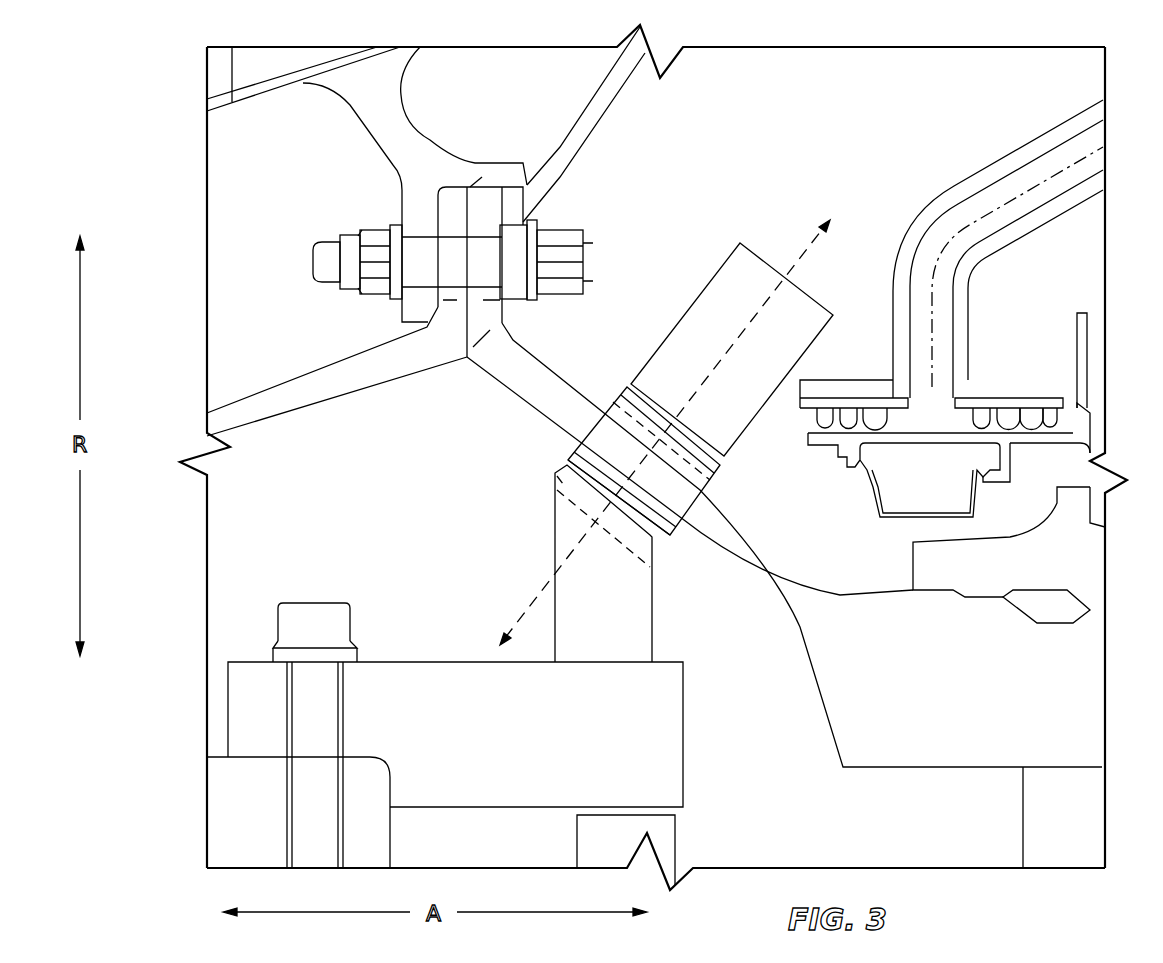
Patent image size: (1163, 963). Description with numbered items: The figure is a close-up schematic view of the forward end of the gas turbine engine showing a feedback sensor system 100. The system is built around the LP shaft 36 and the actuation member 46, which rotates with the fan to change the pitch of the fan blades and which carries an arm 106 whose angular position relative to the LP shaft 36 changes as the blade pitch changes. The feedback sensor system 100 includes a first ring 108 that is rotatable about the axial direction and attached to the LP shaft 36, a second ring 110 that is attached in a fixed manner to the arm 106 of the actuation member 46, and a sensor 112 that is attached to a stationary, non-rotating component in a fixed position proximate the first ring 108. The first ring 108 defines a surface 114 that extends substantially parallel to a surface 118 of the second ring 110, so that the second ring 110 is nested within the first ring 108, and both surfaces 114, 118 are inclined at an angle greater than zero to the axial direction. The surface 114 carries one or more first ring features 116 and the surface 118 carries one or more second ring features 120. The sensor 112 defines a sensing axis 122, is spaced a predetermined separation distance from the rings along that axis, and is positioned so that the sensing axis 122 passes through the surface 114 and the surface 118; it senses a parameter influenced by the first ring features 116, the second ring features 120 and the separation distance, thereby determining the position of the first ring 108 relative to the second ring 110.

The feedback sensor system 100 is at (746, 95).
The LP shaft 36 is at (784, 588).
The actuation member 46 is at (300, 556).
The arm 106 is at (373, 717).
The first ring 108 is at (616, 413).
The second ring 110 is at (577, 592).
The sensor 112 is at (722, 297).
The surface 114 is at (636, 376).
The first ring features 116 is at (640, 413).
The surface 118 is at (652, 515).
The second ring features 120 is at (573, 487).
The sensing axis 122 is at (800, 255).